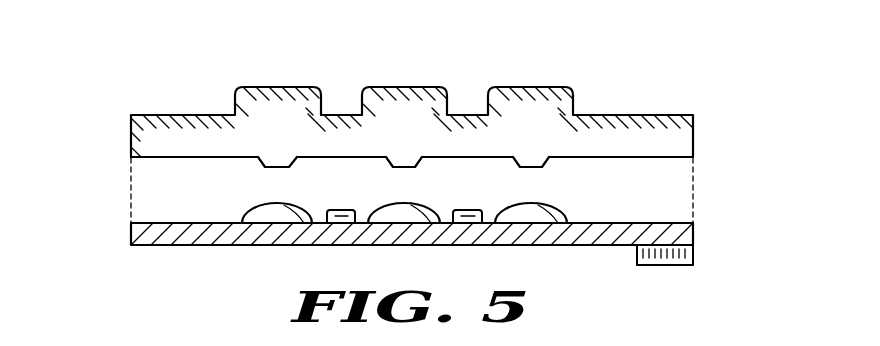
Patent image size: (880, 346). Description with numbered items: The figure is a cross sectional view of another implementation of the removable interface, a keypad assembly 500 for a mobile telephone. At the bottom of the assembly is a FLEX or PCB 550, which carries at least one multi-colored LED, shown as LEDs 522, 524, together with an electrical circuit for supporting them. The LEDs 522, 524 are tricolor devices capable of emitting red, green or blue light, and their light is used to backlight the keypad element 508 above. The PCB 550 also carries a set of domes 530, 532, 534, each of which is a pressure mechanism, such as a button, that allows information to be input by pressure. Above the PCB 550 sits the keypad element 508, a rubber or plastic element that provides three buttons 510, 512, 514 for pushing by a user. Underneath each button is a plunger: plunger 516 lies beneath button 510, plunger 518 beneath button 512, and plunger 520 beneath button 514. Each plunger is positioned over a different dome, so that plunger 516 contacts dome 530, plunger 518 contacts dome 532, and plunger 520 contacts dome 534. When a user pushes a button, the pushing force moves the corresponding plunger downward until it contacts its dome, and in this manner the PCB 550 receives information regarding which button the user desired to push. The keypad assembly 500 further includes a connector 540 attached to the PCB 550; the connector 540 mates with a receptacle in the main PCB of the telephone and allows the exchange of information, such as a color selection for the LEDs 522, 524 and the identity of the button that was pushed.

The keypad assembly 500 is at (258, 312).
The keypad element 508 is at (131, 129).
The button 510 is at (280, 87).
The button 512 is at (404, 87).
The button 514 is at (533, 87).
The plunger 516 is at (262, 166).
The plunger 518 is at (408, 170).
The plunger 520 is at (547, 166).
The multi-colored LED 522 is at (337, 209).
The multi-colored LED 524 is at (479, 209).
The dome 530 is at (250, 209).
The dome 532 is at (403, 205).
The dome 534 is at (562, 208).
The connector 540 is at (663, 267).
The PCB 550 is at (131, 234).